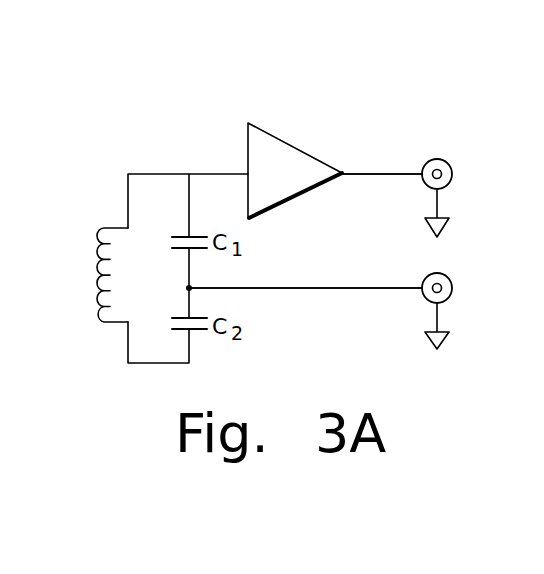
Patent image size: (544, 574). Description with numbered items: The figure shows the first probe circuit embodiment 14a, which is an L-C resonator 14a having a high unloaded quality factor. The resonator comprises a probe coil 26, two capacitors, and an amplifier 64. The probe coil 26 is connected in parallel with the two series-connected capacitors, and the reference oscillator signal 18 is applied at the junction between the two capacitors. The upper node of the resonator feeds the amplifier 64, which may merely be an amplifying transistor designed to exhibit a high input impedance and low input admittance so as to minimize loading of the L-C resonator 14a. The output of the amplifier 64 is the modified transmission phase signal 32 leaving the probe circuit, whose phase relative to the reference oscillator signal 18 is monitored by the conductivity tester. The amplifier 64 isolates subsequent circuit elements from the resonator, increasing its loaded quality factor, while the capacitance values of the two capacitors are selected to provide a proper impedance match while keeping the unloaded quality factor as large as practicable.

The first probe circuit embodiment 14a is at (411, 136).
The reference oscillator signal 18 is at (383, 290).
The probe coil 26 is at (98, 327).
The modified transmission phase signal 32 is at (383, 176).
The amplifier 64 is at (292, 143).